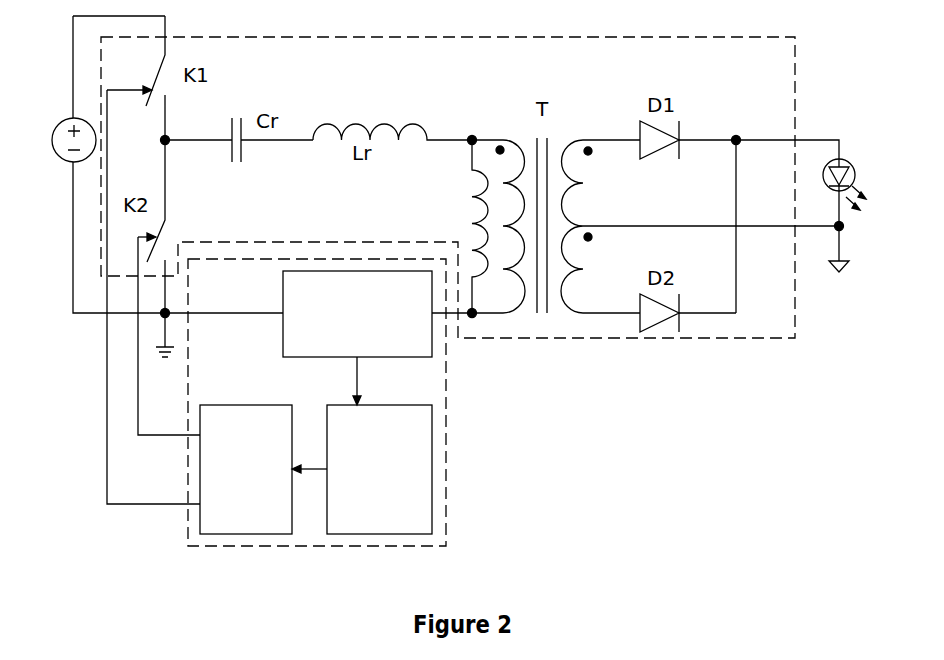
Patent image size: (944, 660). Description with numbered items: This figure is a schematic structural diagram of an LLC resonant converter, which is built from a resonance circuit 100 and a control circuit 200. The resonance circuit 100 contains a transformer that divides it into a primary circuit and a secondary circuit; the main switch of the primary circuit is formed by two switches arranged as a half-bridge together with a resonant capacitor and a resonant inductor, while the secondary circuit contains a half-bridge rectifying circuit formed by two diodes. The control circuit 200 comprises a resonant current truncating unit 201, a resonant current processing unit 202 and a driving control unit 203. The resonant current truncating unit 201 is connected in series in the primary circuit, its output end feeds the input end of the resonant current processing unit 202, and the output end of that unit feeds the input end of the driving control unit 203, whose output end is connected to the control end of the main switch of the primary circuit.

The resonance circuit 100 is at (730, 340).
The control circuit 200 is at (446, 430).
The resonant current truncating unit 201 is at (283, 322).
The resonant current processing unit 202 is at (367, 400).
The driving control unit 203 is at (238, 400).